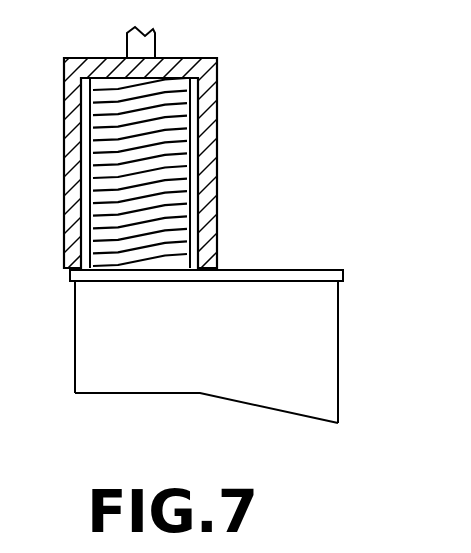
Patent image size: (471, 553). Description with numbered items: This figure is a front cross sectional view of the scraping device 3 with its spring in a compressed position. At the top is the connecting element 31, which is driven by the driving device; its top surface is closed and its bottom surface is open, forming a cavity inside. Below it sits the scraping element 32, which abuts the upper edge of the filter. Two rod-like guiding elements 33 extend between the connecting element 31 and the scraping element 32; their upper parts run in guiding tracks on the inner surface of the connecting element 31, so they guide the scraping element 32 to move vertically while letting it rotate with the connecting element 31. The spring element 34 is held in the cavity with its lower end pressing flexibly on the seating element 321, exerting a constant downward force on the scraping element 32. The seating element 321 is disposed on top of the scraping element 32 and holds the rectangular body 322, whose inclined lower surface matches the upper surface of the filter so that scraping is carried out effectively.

The scraping device 3 is at (294, 107).
The connecting element 31 is at (198, 92).
The scraping element 32 is at (333, 352).
The guiding elements 33 is at (217, 160).
The spring element 34 is at (150, 190).
The seating element 321 is at (313, 278).
The rectangular body 322 is at (290, 388).